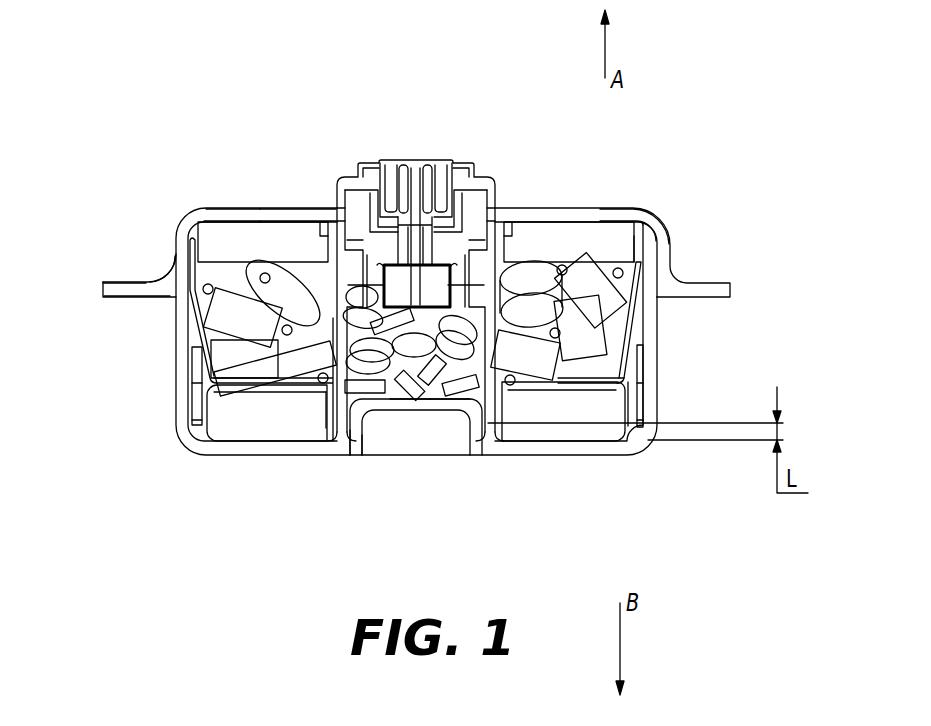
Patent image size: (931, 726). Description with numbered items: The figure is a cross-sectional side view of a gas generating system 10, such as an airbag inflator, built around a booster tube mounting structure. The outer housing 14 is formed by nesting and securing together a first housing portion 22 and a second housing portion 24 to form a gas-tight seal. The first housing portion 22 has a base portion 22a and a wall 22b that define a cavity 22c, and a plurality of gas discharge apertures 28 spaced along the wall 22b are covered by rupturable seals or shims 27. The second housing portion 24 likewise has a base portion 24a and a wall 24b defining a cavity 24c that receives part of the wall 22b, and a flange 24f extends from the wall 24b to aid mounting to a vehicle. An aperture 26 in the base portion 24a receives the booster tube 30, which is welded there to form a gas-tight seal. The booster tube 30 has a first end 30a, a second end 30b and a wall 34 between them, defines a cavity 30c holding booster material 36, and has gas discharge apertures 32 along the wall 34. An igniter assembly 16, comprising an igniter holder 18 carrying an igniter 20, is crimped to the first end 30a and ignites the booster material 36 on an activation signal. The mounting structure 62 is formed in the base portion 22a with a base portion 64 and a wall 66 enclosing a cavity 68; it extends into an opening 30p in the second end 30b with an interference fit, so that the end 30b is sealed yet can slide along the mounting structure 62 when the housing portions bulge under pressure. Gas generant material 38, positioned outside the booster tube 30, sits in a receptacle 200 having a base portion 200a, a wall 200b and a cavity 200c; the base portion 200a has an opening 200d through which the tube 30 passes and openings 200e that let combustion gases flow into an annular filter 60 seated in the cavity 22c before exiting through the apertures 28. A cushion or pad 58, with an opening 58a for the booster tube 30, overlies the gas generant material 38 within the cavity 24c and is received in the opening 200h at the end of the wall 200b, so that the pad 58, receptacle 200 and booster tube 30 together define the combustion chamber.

The gas generating system 10 is at (420, 313).
The outer housing 14 is at (180, 202).
The igniter assembly 16 is at (344, 212).
The igniter holder 18 is at (384, 214).
The igniter 20 is at (411, 285).
The first housing portion 22 is at (220, 378).
The base portion 22a is at (245, 450).
The wall 22b is at (192, 317).
The cavity 22c is at (637, 330).
The second housing portion 24 is at (227, 216).
The base portion 24a is at (282, 216).
The wall 24b is at (170, 256).
The cavity 24c is at (639, 233).
The flange 24f is at (108, 281).
The aperture 26 is at (328, 228).
The seals or shims 27 is at (640, 352).
The gas discharge apertures 28 is at (191, 386).
The booster tube 30 is at (340, 440).
The first end 30a is at (486, 190).
The second end 30b is at (338, 425).
The cavity 30c is at (484, 392).
The opening 30p is at (485, 438).
The gas discharge apertures 32 is at (330, 342).
The wall 34 is at (342, 222).
The booster material 36 is at (471, 378).
The gas generant material 38 is at (243, 318).
The cushion or pad 58 is at (231, 243).
The opening 58a is at (505, 248).
The filter 60 is at (251, 417).
The mounting structure 62 is at (432, 403).
The base portion 64 is at (414, 403).
The wall 66 is at (355, 445).
The cavity 68 is at (385, 428).
The receptacle 200 is at (648, 345).
The base portion 200a is at (721, 412).
The wall 200b is at (628, 364).
The cavity 200c is at (626, 292).
The opening 200d is at (331, 402).
The openings 200e is at (548, 380).
The opening 200h is at (641, 243).